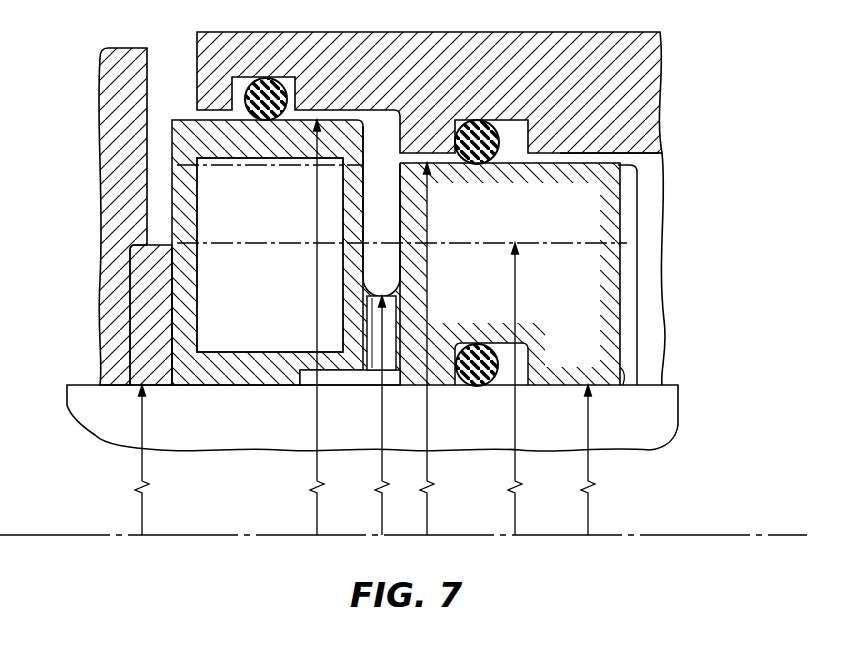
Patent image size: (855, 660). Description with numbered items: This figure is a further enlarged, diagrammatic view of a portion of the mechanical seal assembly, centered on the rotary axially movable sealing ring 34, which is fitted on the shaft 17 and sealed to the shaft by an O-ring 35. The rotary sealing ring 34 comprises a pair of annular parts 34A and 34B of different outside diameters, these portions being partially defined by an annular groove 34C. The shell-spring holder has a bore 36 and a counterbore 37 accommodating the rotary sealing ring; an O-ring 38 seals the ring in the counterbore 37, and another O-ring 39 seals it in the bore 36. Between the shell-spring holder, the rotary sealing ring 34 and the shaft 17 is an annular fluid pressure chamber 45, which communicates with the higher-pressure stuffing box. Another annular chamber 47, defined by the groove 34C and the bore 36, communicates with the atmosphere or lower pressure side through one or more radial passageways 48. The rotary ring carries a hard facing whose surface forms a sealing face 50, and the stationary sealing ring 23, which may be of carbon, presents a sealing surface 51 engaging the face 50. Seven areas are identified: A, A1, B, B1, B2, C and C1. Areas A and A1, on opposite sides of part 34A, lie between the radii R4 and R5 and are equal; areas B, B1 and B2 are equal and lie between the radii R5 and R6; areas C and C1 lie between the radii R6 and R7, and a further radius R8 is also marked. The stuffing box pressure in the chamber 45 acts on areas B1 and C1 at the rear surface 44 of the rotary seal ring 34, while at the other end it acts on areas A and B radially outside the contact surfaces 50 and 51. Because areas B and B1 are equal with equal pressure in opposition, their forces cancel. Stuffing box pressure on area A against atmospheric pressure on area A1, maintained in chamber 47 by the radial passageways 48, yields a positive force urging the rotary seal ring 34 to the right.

The shaft 17 is at (660, 450).
The stationary sealing ring 23 is at (110, 212).
The rotary axially movable sealing ring 34 is at (260, 364).
The annular part 34A is at (270, 255).
The annular part 34B is at (513, 275).
The annular groove 34C is at (402, 226).
The O-ring 35 is at (481, 376).
The bore 36 is at (386, 110).
The counterbore 37 is at (592, 153).
The O-ring 38 is at (484, 116).
The O-ring 39 is at (286, 92).
The rear surface 44 is at (626, 387).
The annular fluid pressure chamber 45 is at (662, 263).
The annular chamber 47 is at (388, 277).
The radial passageway 48 is at (391, 325).
The sealing face 50 is at (176, 303).
The sealing surface 51 is at (178, 278).
The area A is at (170, 141).
The area B is at (170, 202).
The area C is at (128, 317).
The area A1 is at (378, 142).
The area B1 is at (637, 202).
The area C1 is at (640, 310).
The area B2 is at (377, 203).
The radius R4 is at (300, 327).
The radius R5 is at (441, 349).
The radius R6 is at (528, 389).
The radius R7 is at (379, 460).
The radius R8 is at (367, 415).